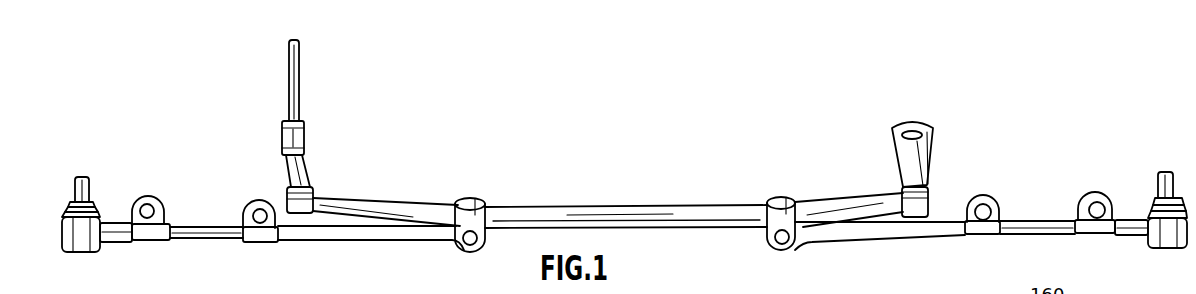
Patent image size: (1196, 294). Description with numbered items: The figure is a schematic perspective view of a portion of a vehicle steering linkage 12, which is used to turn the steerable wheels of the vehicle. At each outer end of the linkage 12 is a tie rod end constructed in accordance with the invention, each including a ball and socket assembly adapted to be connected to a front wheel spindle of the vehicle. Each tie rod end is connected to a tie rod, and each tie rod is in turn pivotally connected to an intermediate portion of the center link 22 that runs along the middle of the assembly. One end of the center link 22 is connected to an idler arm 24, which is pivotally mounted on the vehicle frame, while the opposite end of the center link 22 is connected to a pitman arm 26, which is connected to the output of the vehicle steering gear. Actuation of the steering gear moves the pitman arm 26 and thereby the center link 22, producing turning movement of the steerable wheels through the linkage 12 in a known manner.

The vehicle steering linkage 12 is at (789, 115).
The center link 22 is at (625, 218).
The idler arm 24 is at (305, 163).
The pitman arm 26 is at (907, 157).